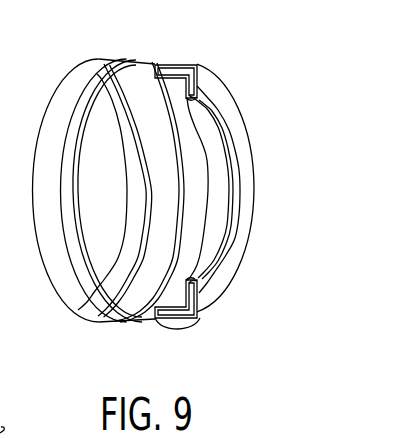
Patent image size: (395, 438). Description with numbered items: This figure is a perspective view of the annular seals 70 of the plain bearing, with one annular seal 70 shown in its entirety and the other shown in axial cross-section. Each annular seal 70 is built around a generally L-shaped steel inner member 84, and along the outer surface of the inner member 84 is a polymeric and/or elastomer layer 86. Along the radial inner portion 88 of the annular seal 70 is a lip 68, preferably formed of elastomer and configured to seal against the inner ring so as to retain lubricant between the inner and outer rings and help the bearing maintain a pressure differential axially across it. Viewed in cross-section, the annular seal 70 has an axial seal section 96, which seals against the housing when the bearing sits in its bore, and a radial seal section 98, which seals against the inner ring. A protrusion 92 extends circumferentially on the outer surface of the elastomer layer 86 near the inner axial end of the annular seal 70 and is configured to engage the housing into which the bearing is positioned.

The lip 68 is at (245, 129).
The annular seal 70 is at (79, 68).
The inner member 84 is at (160, 64).
The elastomer layer 86 is at (51, 95).
The radial inner portion 88 is at (203, 86).
The protrusion 92 is at (156, 63).
The axial seal section 96 is at (160, 313).
The radial seal section 98 is at (197, 293).